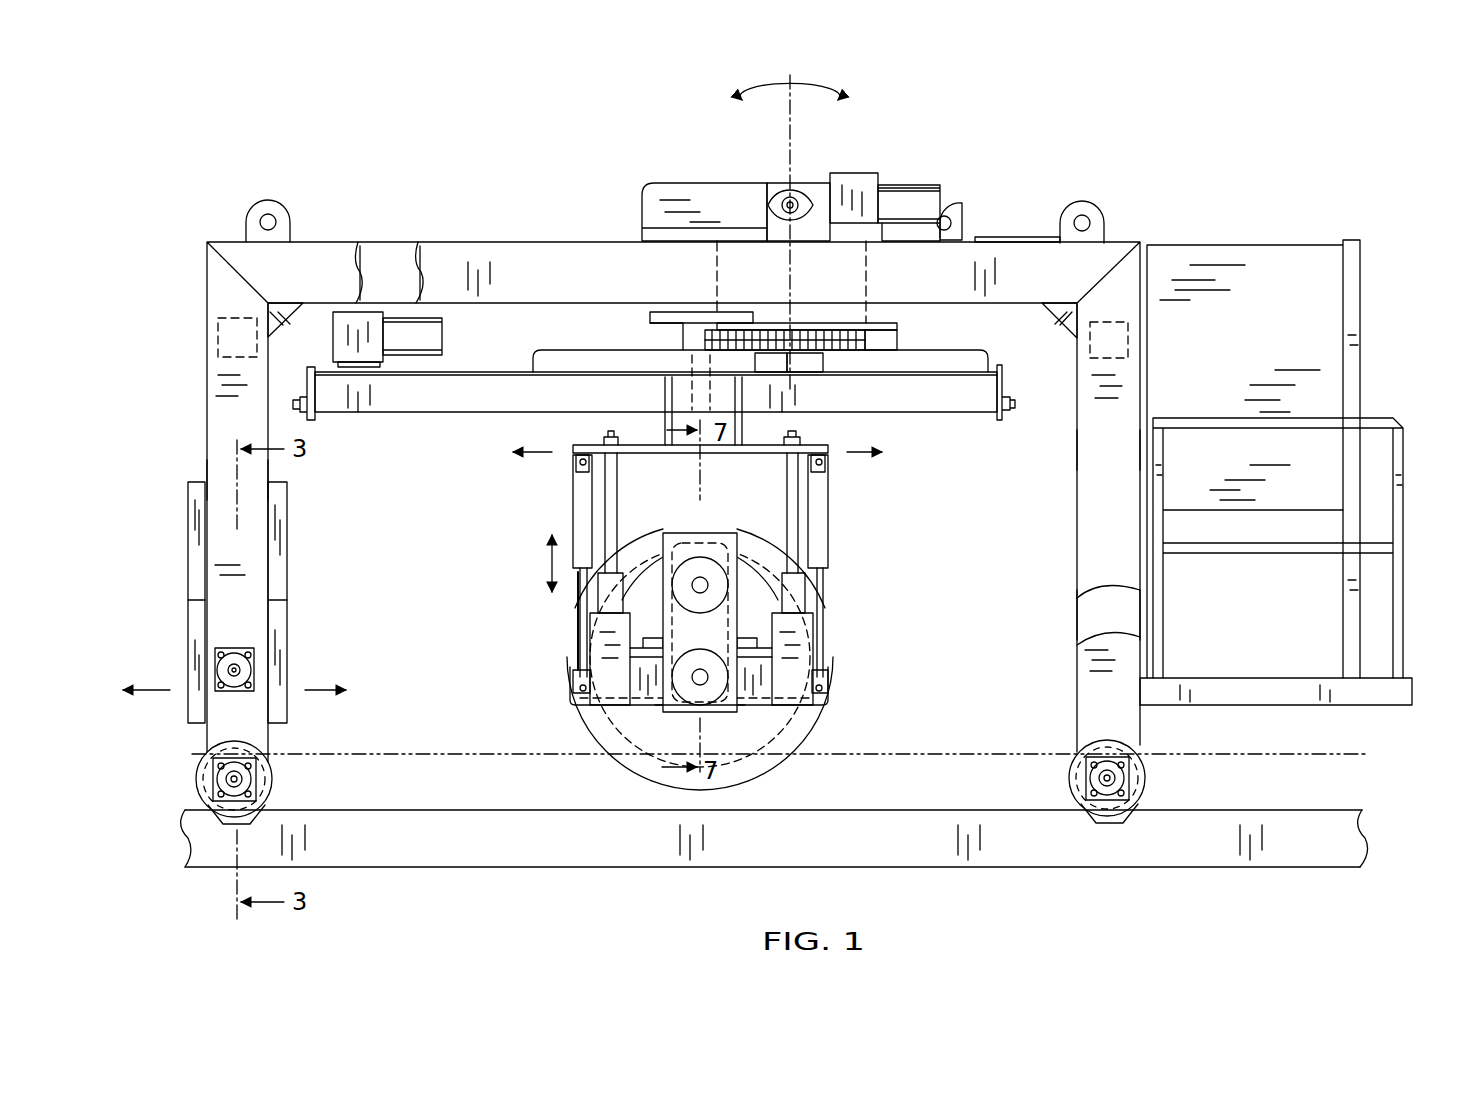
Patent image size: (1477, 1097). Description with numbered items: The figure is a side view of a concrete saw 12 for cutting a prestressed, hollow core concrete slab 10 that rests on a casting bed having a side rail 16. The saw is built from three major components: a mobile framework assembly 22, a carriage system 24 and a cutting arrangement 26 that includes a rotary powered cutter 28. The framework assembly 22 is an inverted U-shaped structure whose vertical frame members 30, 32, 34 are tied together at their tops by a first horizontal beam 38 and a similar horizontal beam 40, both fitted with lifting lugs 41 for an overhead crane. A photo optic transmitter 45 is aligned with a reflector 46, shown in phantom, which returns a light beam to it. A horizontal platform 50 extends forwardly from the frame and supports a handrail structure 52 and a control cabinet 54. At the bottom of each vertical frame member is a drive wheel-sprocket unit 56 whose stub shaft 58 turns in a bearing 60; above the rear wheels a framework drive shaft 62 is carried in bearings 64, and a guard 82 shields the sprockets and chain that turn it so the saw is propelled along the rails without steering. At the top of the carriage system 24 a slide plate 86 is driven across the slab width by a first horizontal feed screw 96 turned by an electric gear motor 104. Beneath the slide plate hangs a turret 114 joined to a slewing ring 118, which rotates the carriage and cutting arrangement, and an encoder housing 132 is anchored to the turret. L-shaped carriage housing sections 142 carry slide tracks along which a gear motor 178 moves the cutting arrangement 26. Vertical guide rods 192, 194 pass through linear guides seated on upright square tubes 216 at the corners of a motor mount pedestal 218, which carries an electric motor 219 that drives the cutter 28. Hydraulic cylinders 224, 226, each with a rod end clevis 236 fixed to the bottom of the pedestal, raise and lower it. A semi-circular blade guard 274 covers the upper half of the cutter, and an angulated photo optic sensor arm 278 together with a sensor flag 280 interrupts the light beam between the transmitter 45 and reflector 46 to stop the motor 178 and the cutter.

The concrete slab 10 is at (993, 752).
The concrete saw 12 is at (905, 153).
The side rail 16 is at (1368, 840).
The mobile framework assembly 22 is at (587, 223).
The carriage system 24 is at (907, 443).
The cutting arrangement 26 is at (832, 590).
The rotary powered cutter 28 is at (787, 725).
The vertical frame member 30 is at (1078, 447).
The vertical frame member 32 is at (1078, 613).
The vertical frame member 34 is at (262, 477).
The first horizontal beam 38 is at (448, 252).
The horizontal beam 40 is at (393, 250).
The lifting lugs 41 is at (278, 207).
The photo optic transmitter 45 is at (220, 337).
The reflector 46 is at (1128, 340).
The horizontal platform 50 is at (1414, 692).
The handrail structure 52 is at (1398, 505).
The control cabinet 54 is at (1270, 255).
The drive wheel-sprocket unit 56 is at (272, 778).
The stub shaft 58 is at (234, 779).
The bearing 60 is at (270, 750).
The framework drive shaft 62 is at (232, 658).
The bearings 64 is at (254, 650).
The guard 82 is at (283, 580).
The slide plate 86 is at (708, 193).
The first horizontal feed screw 96 is at (792, 193).
The electric gear motor 104 is at (927, 198).
The turret 114 is at (867, 323).
The slewing ring 118 is at (808, 340).
The housing 132 is at (900, 337).
The carriage housing section 142 is at (468, 408).
The gear motor 178 is at (432, 335).
The guide rod 192 is at (617, 510).
The guide rod 194 is at (788, 512).
The upright square tube 216 is at (602, 697).
The motor mount pedestal 218 is at (650, 705).
The electric motor 219 is at (743, 562).
The hydraulic cylinder 224 is at (577, 510).
The hydraulic cylinder 226 is at (828, 500).
The rod end clevis 236 is at (577, 677).
The semi-circular blade guard 274 is at (577, 658).
The photo optic sensor arm 278 is at (683, 338).
The sensor flag 280 is at (647, 313).